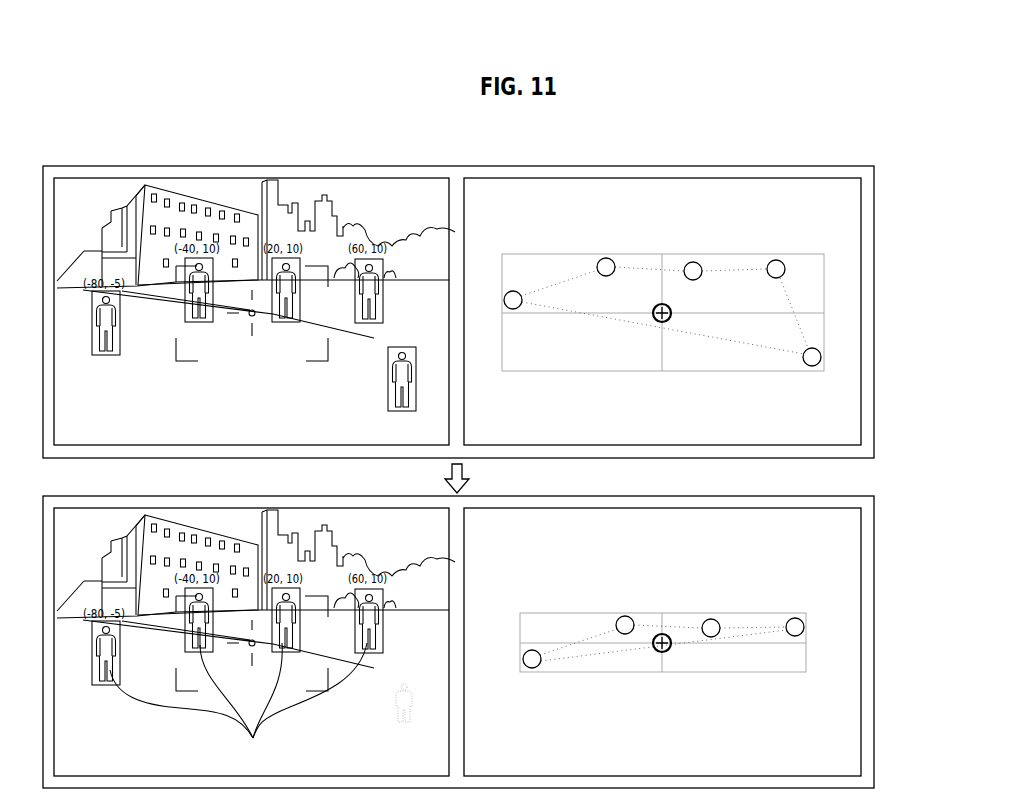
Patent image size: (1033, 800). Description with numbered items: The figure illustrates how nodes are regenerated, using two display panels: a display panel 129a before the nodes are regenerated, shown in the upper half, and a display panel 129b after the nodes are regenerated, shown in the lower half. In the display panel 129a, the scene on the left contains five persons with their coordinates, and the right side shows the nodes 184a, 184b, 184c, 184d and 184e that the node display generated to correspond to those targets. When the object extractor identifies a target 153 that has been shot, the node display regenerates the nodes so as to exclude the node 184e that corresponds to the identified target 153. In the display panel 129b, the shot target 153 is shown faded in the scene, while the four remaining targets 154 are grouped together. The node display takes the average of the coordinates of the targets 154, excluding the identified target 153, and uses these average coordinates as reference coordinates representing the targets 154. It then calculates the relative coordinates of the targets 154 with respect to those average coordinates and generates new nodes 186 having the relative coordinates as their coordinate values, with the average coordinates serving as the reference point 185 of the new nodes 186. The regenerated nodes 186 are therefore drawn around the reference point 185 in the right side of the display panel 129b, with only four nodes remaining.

The display panel before nodes are regenerated 129a is at (492, 312).
The display panel after nodes are regenerated 129b is at (492, 642).
The node 184a is at (512, 291).
The node 184b is at (606, 258).
The node 184c is at (693, 262).
The node 184d is at (776, 260).
The node 184e is at (812, 366).
The reference point 185 is at (669, 652).
The new nodes 186 is at (793, 618).
The targets 154 is at (238, 702).
The target that has been shot 153 is at (390, 716).